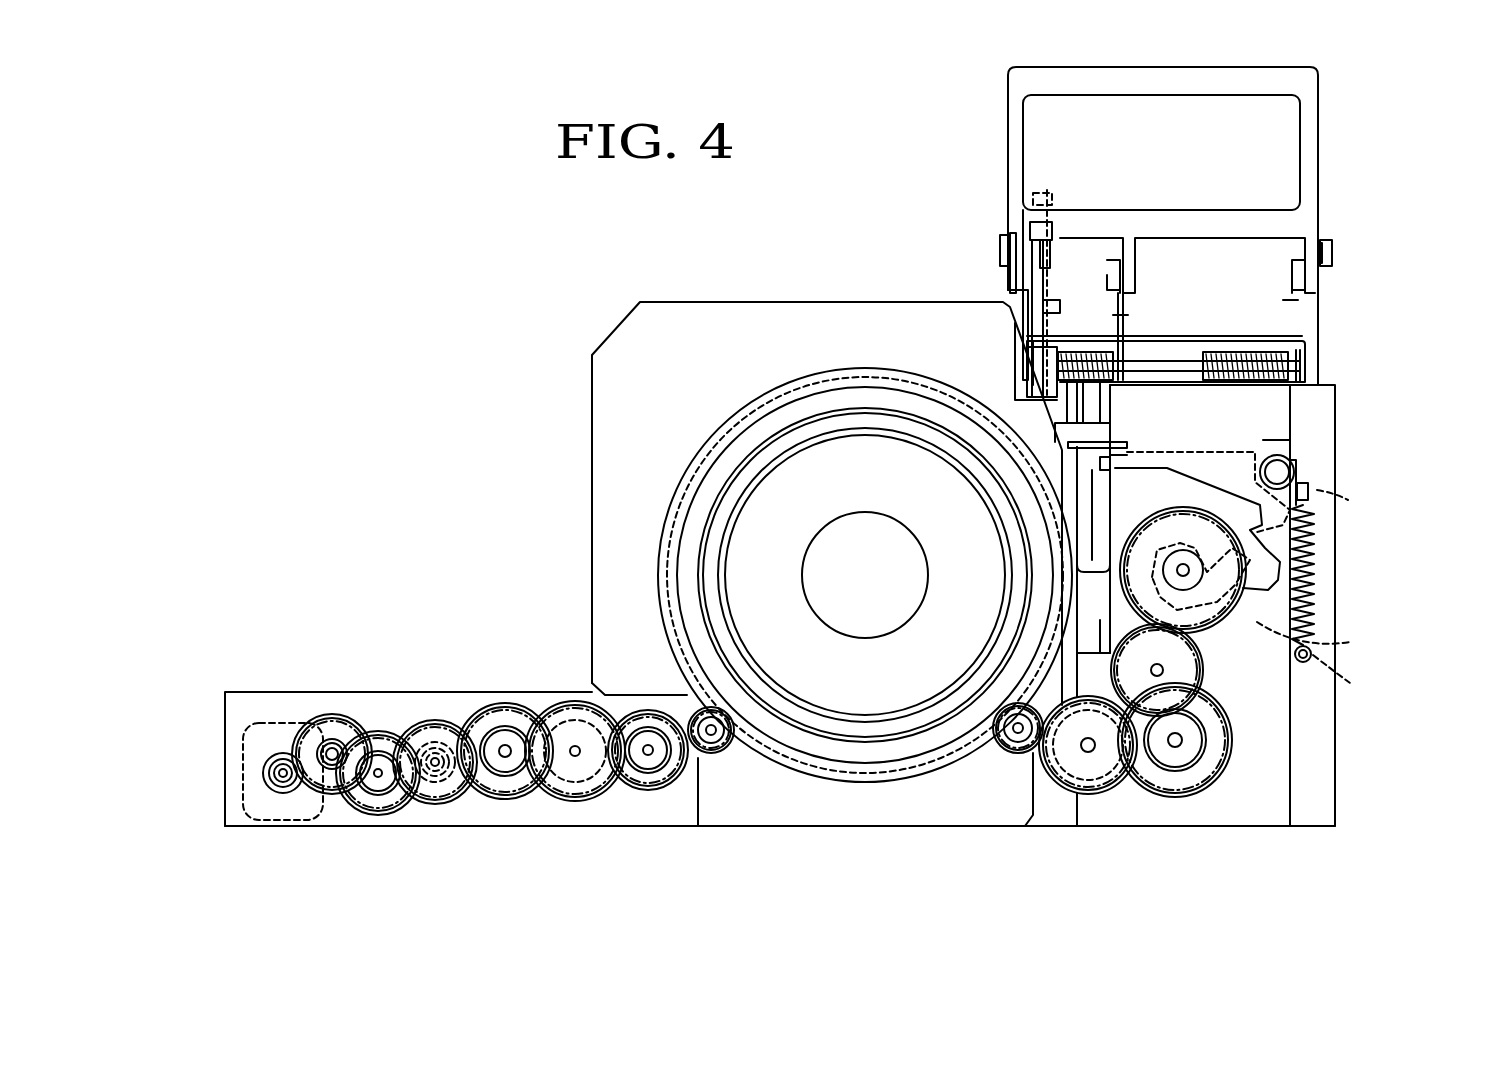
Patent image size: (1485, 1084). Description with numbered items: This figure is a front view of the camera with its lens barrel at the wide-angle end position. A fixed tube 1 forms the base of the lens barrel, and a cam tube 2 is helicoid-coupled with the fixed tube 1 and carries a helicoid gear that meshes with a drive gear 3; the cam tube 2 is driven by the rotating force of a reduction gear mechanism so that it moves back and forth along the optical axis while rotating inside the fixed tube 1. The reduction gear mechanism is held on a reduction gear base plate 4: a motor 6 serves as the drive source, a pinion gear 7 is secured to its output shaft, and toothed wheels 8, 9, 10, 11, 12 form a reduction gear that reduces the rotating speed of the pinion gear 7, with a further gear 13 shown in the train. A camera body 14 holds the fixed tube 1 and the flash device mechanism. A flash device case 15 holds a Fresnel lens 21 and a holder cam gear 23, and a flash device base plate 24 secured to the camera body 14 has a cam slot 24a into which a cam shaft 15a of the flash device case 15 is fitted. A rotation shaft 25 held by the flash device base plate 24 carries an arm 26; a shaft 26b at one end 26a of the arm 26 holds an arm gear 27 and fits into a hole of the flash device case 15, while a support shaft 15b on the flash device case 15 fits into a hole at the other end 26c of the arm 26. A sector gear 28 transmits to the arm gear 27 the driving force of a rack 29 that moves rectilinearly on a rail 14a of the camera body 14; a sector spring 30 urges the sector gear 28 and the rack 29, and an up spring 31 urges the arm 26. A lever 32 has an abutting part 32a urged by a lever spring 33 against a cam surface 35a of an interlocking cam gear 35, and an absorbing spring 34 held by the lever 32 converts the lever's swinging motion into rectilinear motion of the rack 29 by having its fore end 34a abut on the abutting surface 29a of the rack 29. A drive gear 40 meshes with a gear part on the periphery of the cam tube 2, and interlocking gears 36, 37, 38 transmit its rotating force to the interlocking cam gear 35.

The fixed tube 1 is at (770, 796).
The cam tube 2 is at (866, 758).
The drive gear 3 is at (713, 755).
The reduction gear base plate 4 is at (256, 706).
The motor 6 is at (243, 768).
The pinion gear 7 is at (290, 793).
The toothed wheel 8 is at (332, 796).
The toothed wheel 9 is at (382, 792).
The toothed wheel 10 is at (437, 786).
The toothed wheel 11 is at (505, 792).
The toothed wheel 12 is at (578, 786).
The gear 13 is at (644, 787).
The camera body 14 is at (1255, 806).
The rail 14a is at (1100, 650).
The flash device case 15 is at (1265, 75).
The cam shaft 15a is at (1112, 257).
The support shaft 15b is at (1334, 246).
The Fresnel lens 21 is at (1287, 122).
The holder cam gear 23 is at (1050, 200).
The flash device base plate 24 is at (1162, 380).
The cam slot 24a is at (1123, 317).
The rotation shaft 25 is at (1188, 368).
The arm 26 is at (1233, 338).
The one end of the arm 26a is at (1040, 235).
The shaft 26b is at (1004, 250).
The other end of the arm 26c is at (1332, 272).
The arm gear 27 is at (1032, 225).
The sector gear 28 is at (1030, 320).
The rack 29 is at (1097, 493).
The abutting surface 29a is at (1120, 457).
The sector spring 30 is at (1082, 355).
The up spring 31 is at (1283, 366).
The lever 32 is at (1272, 558).
The abutting part 32a is at (1245, 605).
The lever spring 33 is at (1316, 588).
The absorbing spring 34 is at (1312, 494).
The fore end 34a is at (1087, 452).
The interlocking cam gear 35 is at (1218, 586).
The cam surface 35a is at (1316, 651).
The interlocking gear 36 is at (1185, 667).
The interlocking gear 37 is at (1182, 782).
The interlocking gear 38 is at (1061, 788).
The drive gear 40 is at (1005, 755).